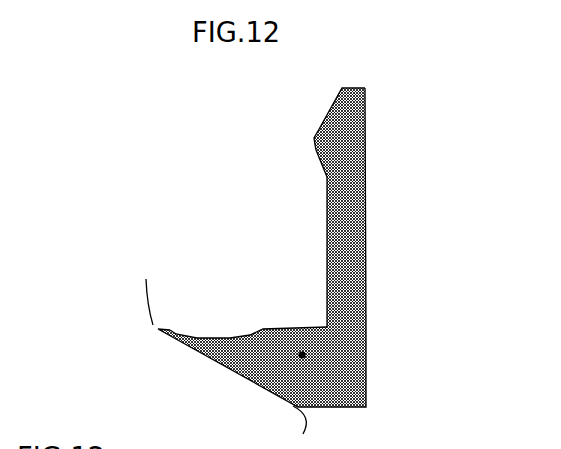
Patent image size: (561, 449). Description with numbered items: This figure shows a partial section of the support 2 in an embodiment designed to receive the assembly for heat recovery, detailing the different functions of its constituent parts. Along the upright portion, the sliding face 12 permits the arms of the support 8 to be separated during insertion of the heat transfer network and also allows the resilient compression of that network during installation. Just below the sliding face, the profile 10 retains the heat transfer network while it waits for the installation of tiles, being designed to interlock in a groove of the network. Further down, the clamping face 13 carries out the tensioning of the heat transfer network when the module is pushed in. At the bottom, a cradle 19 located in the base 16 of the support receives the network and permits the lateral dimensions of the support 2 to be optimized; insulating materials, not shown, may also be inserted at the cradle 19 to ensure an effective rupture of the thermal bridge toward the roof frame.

The support 2 is at (302, 355).
The arms of the support 8 is at (372, 78).
The profile 10 is at (307, 137).
The sliding face 12 is at (329, 74).
The clamping face 13 is at (306, 157).
The base of the support 16 is at (373, 328).
The cradle 19 is at (222, 333).